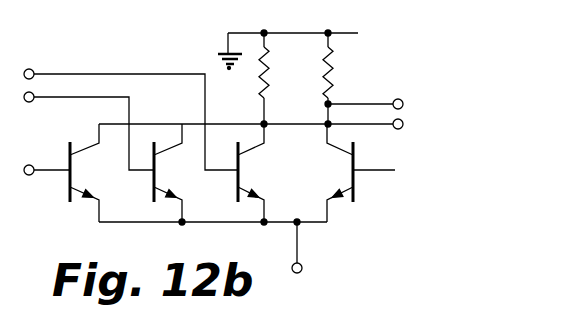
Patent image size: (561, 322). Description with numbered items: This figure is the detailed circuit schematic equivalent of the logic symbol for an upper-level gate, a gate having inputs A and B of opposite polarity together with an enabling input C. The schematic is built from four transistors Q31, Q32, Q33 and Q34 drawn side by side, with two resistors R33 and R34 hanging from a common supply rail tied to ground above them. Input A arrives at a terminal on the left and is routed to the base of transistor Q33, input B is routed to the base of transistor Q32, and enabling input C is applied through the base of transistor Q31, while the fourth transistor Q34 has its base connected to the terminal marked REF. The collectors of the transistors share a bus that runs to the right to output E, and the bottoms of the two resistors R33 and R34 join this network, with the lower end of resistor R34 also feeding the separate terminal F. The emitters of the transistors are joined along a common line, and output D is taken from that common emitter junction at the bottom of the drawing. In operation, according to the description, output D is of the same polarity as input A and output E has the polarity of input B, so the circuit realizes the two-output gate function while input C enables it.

The transistor Q31 is at (91, 173).
The transistor Q32 is at (175, 173).
The transistor Q33 is at (259, 173).
The transistor Q34 is at (332, 173).
The resistor R33 is at (284, 78).
The resistor R34 is at (349, 78).
The input A is at (124, 117).
The input B is at (82, 129).
The enabling input C is at (40, 171).
The output D is at (305, 250).
The output E is at (259, 125).
The output terminal F is at (373, 105).
The reference voltage terminal REF is at (394, 171).